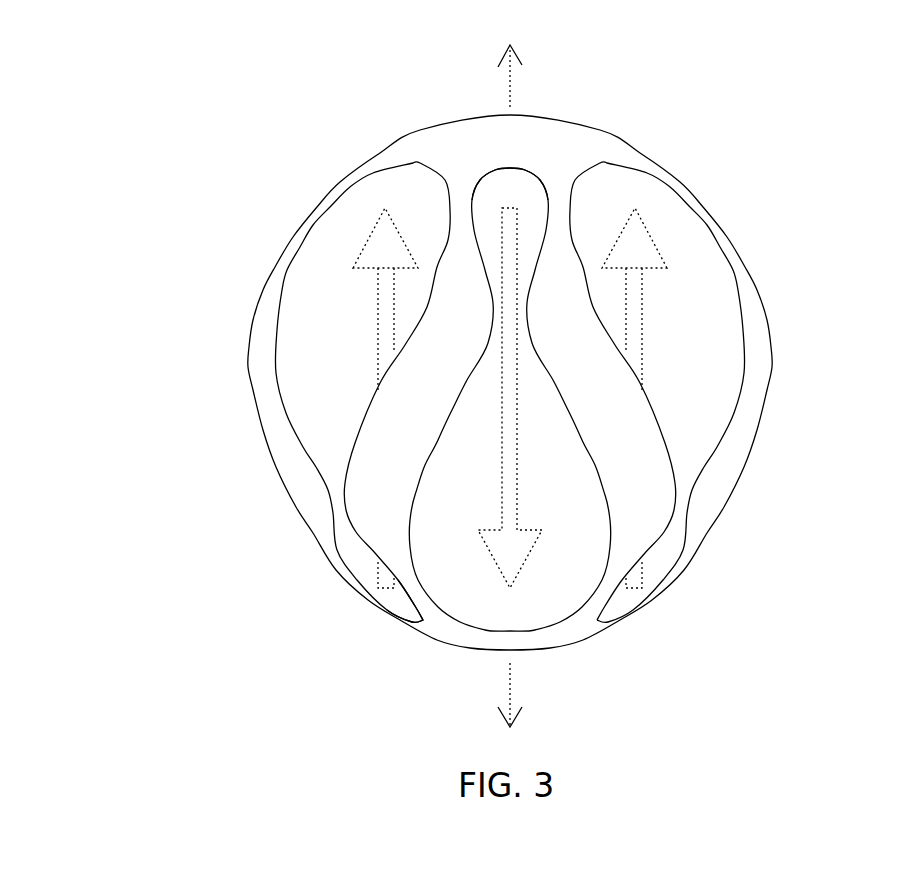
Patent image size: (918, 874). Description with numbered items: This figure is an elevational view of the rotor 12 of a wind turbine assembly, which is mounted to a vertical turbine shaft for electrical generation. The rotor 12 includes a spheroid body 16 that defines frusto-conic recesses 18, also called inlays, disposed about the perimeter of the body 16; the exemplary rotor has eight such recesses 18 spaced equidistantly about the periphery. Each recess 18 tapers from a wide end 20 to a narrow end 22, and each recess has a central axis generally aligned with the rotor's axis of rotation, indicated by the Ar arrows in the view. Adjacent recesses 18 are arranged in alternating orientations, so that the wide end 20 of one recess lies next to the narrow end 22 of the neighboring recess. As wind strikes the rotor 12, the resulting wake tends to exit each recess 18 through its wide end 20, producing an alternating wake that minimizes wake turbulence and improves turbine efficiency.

The rotor 12 is at (157, 178).
The spheroid body 16 is at (249, 352).
The frusto-conic recesses 18 is at (313, 282).
The wide end 20 is at (363, 196).
The narrow end 22 is at (533, 207).